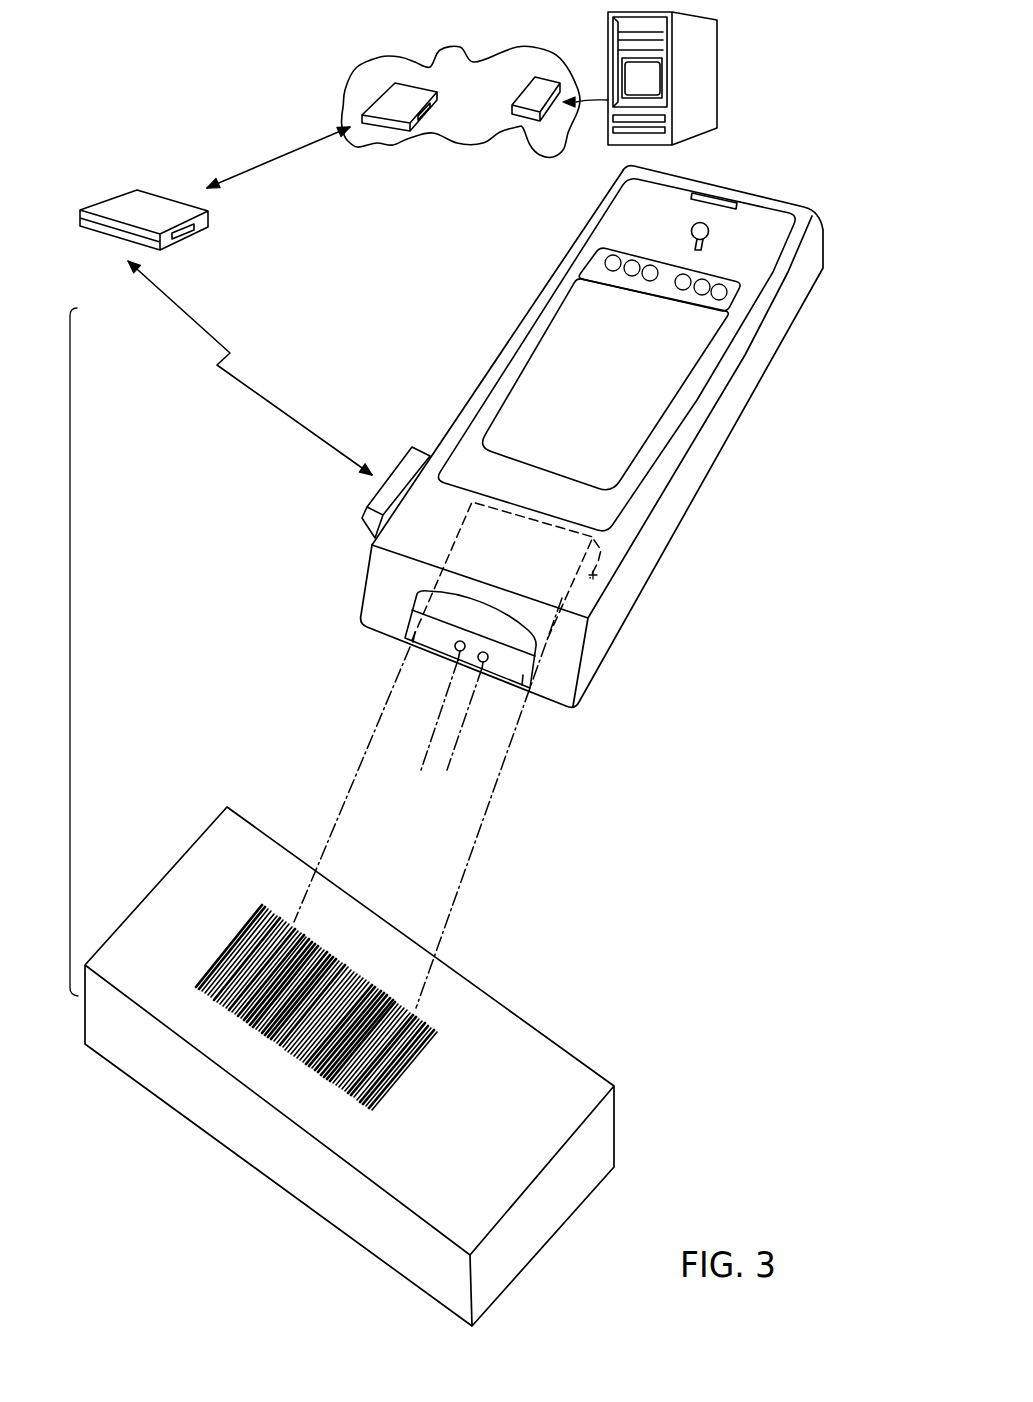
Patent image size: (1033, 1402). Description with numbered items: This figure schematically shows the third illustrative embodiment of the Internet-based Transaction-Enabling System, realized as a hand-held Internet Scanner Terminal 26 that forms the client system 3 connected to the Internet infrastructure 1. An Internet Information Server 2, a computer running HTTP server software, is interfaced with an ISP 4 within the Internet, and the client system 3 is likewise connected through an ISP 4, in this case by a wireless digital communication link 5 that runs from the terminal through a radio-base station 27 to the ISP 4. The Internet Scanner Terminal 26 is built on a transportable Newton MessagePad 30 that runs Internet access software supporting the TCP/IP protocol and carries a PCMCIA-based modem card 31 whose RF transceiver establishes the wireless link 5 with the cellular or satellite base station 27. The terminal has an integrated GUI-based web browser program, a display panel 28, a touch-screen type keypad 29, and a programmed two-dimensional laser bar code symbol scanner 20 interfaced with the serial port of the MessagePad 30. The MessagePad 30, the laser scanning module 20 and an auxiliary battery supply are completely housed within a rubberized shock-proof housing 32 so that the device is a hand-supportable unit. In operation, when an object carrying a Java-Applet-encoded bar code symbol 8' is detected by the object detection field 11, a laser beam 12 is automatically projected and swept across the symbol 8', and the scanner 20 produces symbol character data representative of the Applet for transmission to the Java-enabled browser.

The Internet infrastructure 1 is at (560, 57).
The Internet Information Server 2 is at (718, 102).
The client system 3 is at (67, 659).
The ISP 4 is at (388, 97).
The wireless digital communication link 5 is at (270, 167).
The bar code symbol 8' is at (349, 1066).
The object detection field 11 is at (440, 707).
The laser beam 12 is at (352, 778).
The bar code symbol scanner 20 is at (606, 578).
The Internet Scanner Terminal 26 is at (797, 297).
The radio-base station 27 is at (128, 190).
The display panel 28 is at (648, 420).
The touch-screen type keypad 29 is at (643, 358).
The Newton MessagePad 30 is at (757, 221).
The PCMCIA-based modem card 31 is at (378, 512).
The rubberized shock-proof housing 32 is at (815, 250).